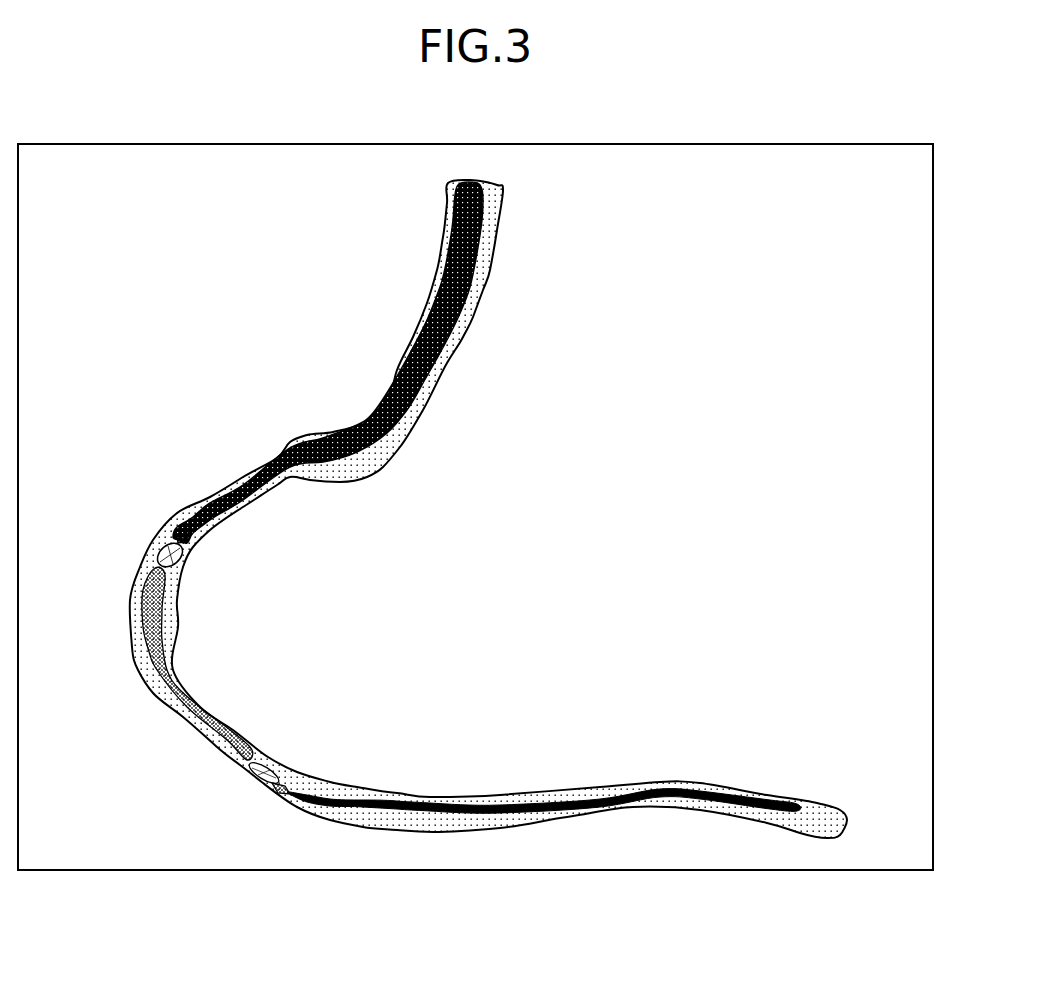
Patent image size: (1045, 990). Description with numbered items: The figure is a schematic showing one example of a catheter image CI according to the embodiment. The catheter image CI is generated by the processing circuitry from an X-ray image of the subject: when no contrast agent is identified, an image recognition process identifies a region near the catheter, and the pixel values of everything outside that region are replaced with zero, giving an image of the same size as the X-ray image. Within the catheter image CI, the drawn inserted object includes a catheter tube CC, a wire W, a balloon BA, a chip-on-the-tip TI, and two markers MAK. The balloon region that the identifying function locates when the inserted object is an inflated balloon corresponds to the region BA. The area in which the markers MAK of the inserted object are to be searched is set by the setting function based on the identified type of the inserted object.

The catheter image CI is at (771, 144).
The catheter tube CC is at (467, 285).
The marker MAK is at (160, 551).
The balloon BA is at (203, 747).
The chip-on-the-tip TI is at (273, 793).
The wire W is at (773, 807).